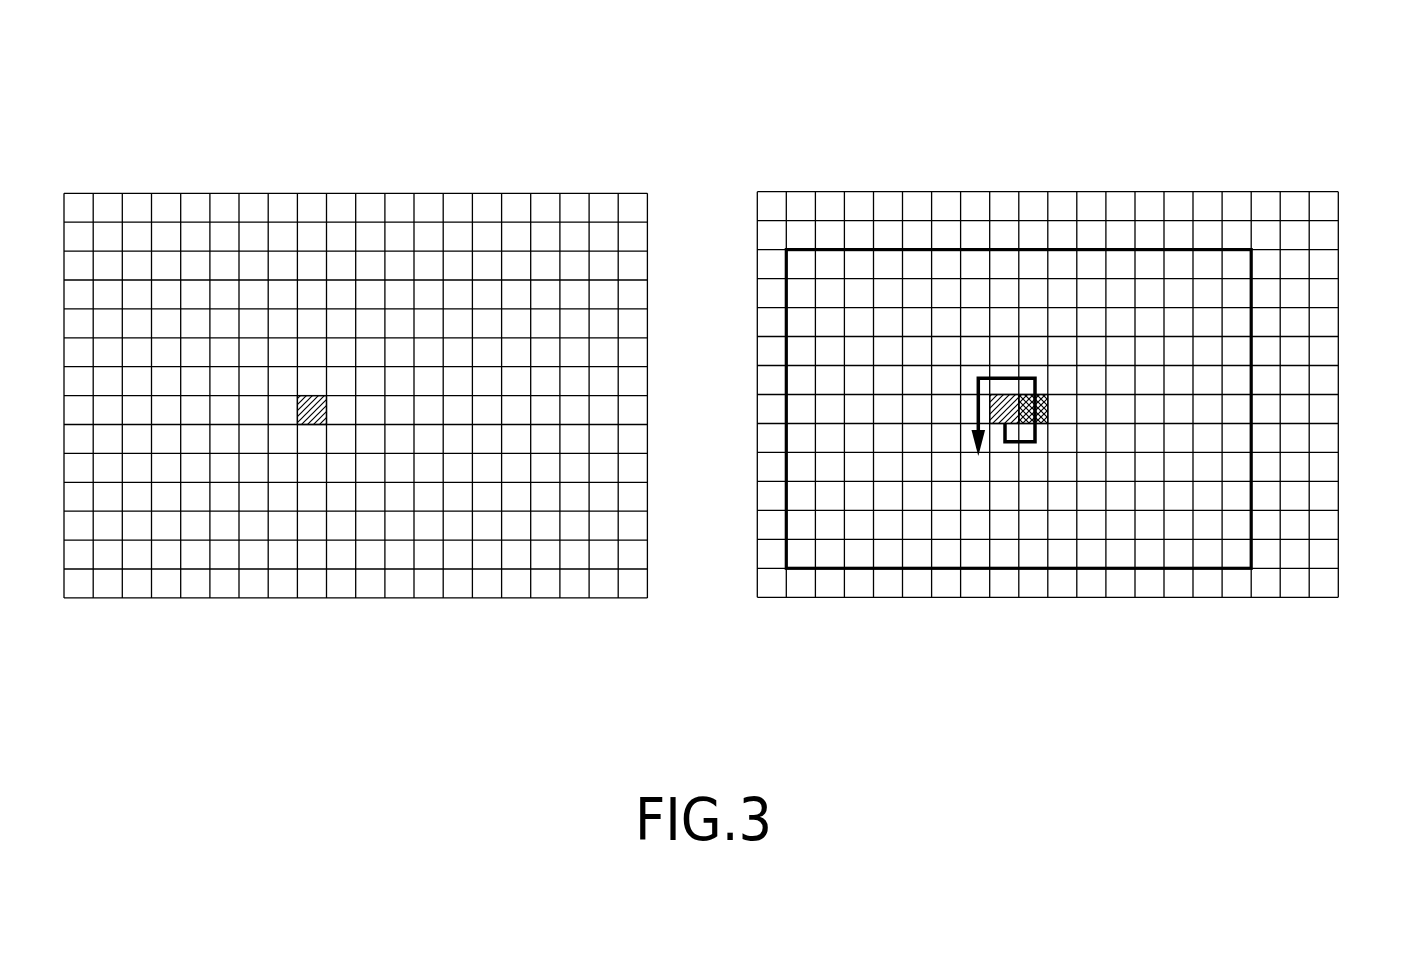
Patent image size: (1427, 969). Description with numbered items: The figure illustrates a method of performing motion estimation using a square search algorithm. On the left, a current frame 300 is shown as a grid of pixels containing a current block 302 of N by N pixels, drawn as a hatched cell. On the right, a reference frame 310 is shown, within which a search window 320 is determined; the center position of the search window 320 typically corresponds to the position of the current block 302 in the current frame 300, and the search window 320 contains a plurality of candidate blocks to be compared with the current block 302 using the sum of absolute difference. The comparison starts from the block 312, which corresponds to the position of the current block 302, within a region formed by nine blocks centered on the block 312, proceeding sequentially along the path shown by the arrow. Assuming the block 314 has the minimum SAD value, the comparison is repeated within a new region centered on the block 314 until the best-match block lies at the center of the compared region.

The current frame 300 is at (522, 156).
The current block 302 is at (300, 412).
The reference frame 310 is at (1212, 155).
The block 312 is at (1003, 377).
The block 314 is at (1049, 402).
The search window 320 is at (1252, 289).